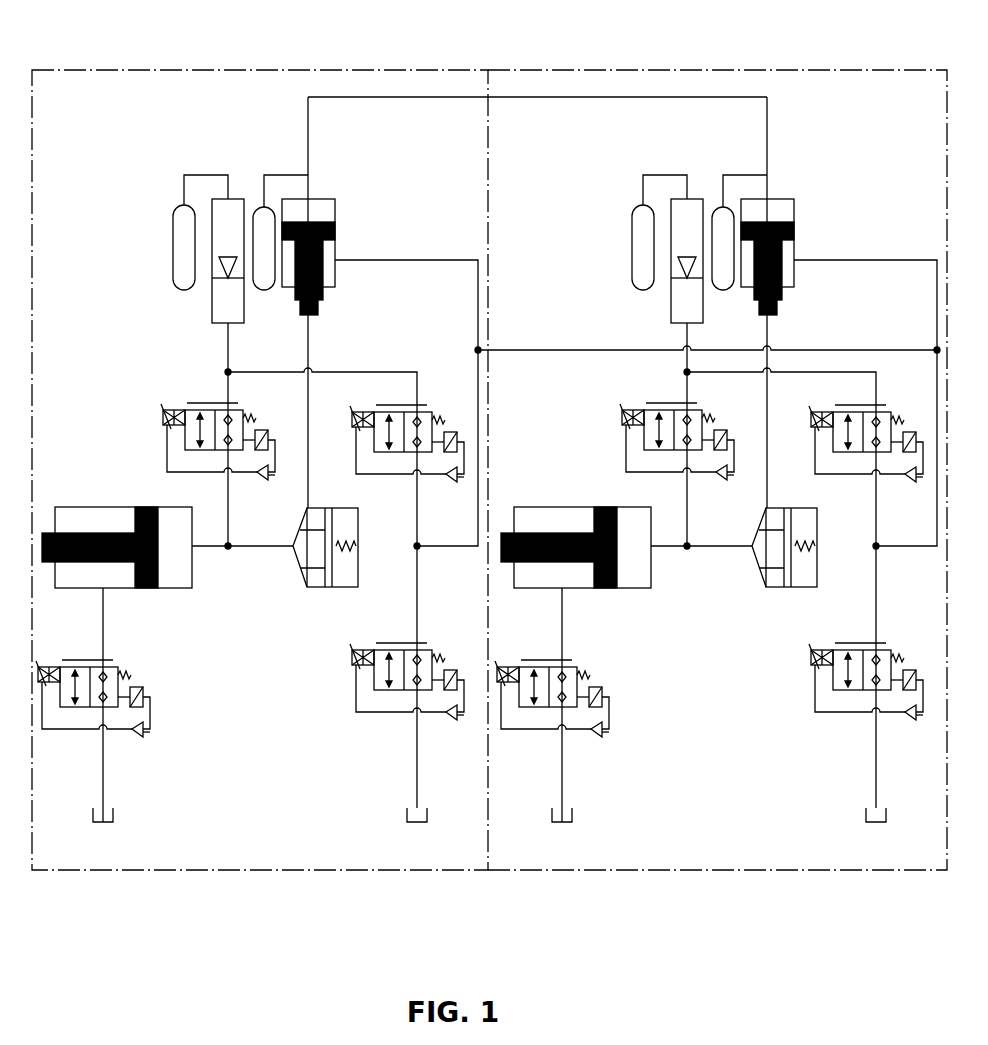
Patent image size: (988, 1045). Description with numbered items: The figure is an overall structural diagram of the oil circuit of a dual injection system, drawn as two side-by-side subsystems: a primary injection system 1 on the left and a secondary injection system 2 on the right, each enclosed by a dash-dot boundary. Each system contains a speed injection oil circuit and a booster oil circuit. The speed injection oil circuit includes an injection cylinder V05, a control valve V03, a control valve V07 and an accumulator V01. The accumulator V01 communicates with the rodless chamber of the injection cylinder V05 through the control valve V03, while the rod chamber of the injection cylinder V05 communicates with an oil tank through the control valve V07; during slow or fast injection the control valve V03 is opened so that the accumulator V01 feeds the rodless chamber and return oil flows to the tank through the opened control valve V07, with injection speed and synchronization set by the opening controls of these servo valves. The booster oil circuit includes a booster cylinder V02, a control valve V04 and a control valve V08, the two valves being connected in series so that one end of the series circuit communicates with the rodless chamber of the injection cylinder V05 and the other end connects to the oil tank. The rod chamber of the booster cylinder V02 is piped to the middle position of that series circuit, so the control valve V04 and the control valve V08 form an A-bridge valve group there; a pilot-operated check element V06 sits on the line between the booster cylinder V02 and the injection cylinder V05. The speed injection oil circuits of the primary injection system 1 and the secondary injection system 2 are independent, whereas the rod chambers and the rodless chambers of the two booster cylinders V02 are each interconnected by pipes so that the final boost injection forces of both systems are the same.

The primary injection system 1 is at (160, 70).
The secondary injection system 2 is at (661, 70).
The accumulator V01 is at (438, 249).
The booster cylinder V02 is at (523, 248).
The control valve V03 is at (447, 431).
The control valve V04 is at (636, 432).
The injection cylinder V05 is at (346, 535).
The pilot-operated check valve V06 is at (547, 557).
The control valve V07 is at (322, 688).
The control valve V08 is at (635, 672).